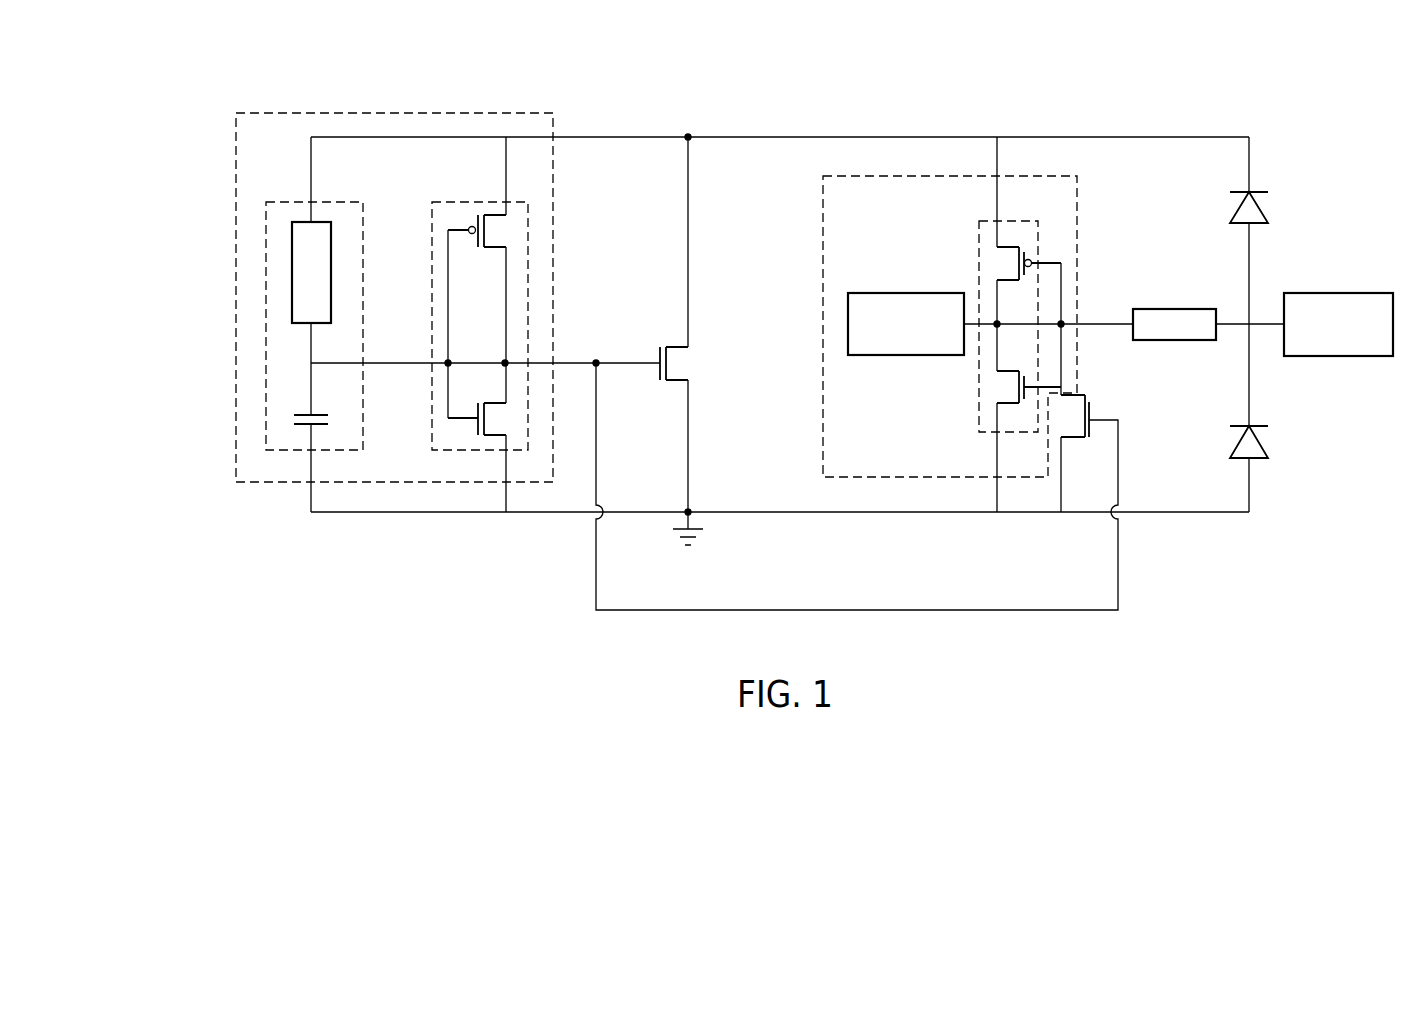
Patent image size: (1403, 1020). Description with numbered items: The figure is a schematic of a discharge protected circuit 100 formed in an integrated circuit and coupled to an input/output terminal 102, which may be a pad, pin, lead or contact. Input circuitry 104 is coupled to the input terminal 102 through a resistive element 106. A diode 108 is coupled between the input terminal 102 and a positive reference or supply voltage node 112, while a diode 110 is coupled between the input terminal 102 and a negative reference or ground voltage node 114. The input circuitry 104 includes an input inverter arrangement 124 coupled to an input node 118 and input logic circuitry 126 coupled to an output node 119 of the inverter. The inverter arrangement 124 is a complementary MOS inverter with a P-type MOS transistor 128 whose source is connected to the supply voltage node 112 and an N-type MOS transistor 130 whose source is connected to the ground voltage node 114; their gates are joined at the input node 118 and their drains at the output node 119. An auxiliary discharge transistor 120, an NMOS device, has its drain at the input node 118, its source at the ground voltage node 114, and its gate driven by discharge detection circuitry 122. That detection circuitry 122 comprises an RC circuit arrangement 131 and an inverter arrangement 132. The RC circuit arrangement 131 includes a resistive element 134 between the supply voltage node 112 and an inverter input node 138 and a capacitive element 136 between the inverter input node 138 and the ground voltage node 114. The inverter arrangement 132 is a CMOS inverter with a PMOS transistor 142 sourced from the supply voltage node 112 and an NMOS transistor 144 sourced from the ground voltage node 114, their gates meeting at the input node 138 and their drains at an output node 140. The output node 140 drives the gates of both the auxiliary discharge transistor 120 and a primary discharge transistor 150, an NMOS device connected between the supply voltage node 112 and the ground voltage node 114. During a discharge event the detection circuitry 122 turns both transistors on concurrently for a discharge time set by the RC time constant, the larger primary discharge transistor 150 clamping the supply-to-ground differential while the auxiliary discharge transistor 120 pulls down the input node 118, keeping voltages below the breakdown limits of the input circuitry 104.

The discharge protected circuit 100 is at (785, 322).
The input/output terminal 102 is at (1340, 293).
The input circuitry 104 is at (822, 200).
The resistive element 106 is at (1172, 309).
The diode 108 is at (1266, 212).
The diode 110 is at (1268, 446).
The positive reference voltage node 112 is at (688, 137).
The negative reference voltage node 114 is at (688, 512).
The input node 118 is at (1061, 324).
The output node 119 is at (997, 324).
The auxiliary discharge transistor 120 is at (1097, 408).
The discharge detection circuitry 122 is at (380, 112).
The input inverter arrangement 124 is at (979, 414).
The input logic circuitry 126 is at (868, 293).
The P-type MOS transistor 128 is at (1000, 257).
The N-type MOS transistor 130 is at (1000, 390).
The RC circuit arrangement 131 is at (265, 415).
The inverter arrangement 132 is at (432, 436).
The resistive element 134 is at (292, 268).
The capacitive element 136 is at (300, 428).
The input node 138 is at (448, 363).
The output node 140 is at (505, 363).
The PMOS transistor 142 is at (470, 217).
The NMOS transistor 144 is at (468, 434).
The primary discharge transistor 150 is at (660, 342).